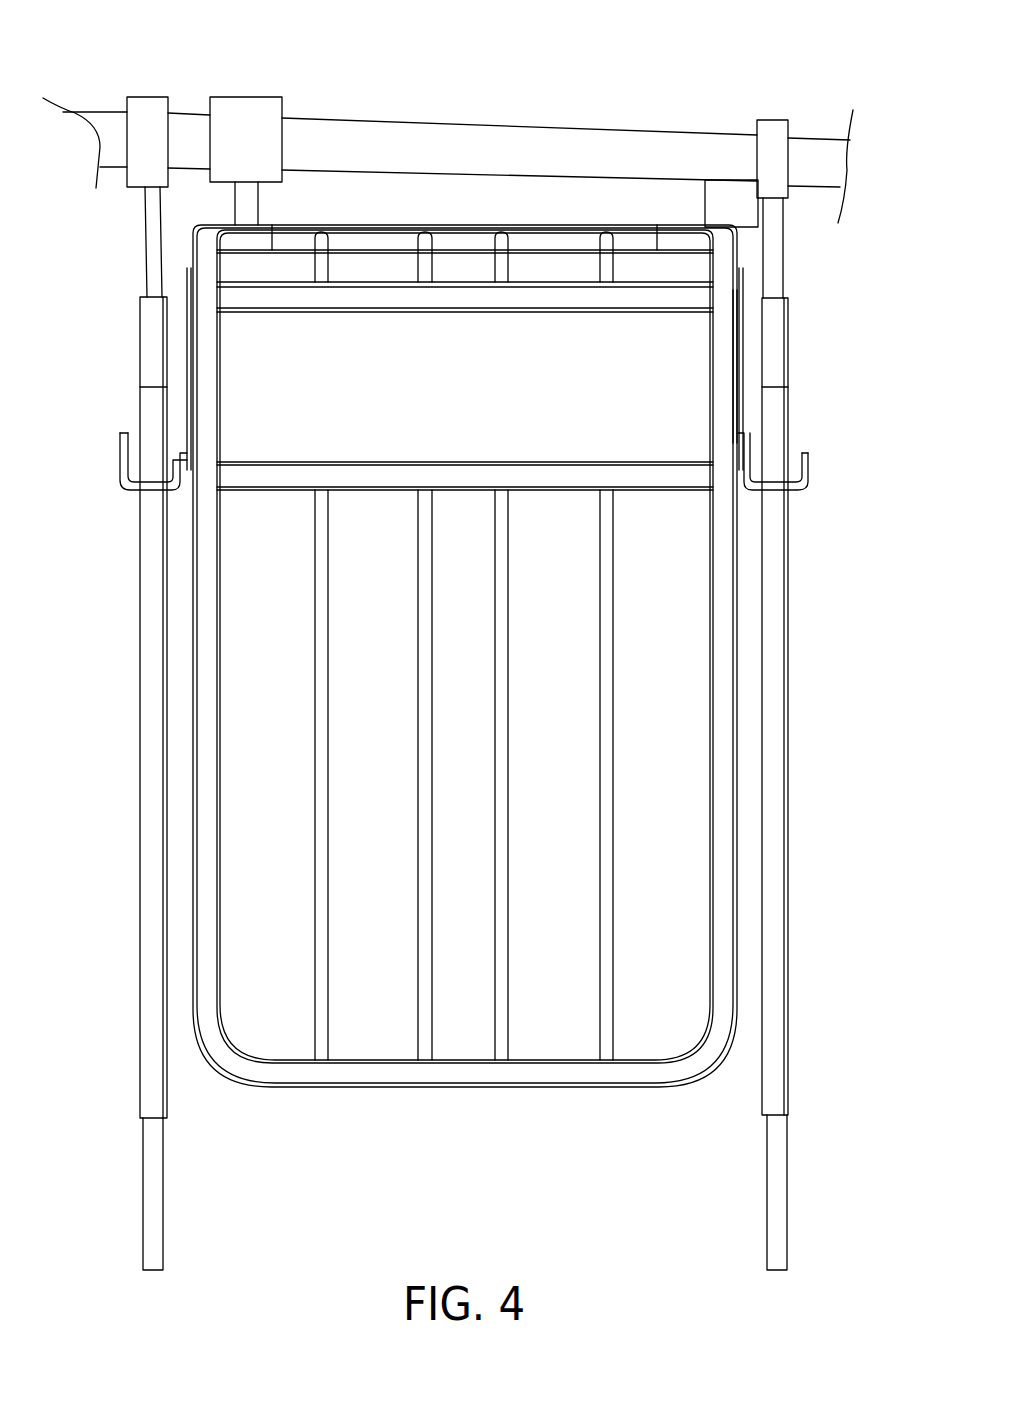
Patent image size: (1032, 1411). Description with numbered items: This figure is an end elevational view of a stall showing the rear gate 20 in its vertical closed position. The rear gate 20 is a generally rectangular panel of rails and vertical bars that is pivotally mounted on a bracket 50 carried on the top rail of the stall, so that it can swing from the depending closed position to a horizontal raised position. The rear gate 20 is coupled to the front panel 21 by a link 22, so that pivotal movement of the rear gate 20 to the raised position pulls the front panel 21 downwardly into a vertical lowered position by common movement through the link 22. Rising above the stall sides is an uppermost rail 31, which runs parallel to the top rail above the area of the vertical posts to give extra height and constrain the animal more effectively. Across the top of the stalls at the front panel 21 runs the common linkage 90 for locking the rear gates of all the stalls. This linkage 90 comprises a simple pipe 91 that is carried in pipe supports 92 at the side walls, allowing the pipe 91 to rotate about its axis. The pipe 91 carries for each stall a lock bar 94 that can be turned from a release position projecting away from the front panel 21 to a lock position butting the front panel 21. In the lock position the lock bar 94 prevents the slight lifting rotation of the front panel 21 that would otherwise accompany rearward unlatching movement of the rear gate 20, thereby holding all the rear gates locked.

The rear gate 20 is at (532, 1073).
The front panel 21 is at (568, 233).
The link 22 is at (732, 368).
The uppermost rail 31 is at (155, 313).
The bracket 50 is at (803, 472).
The common linkage 90 is at (780, 33).
The pipe 91 is at (663, 135).
The pipe supports 92 is at (775, 137).
The lock bar 94 is at (732, 208).